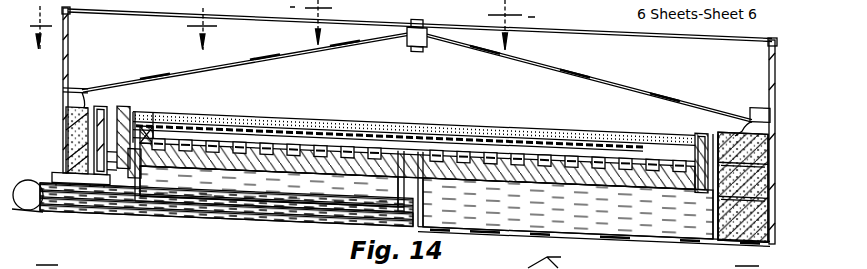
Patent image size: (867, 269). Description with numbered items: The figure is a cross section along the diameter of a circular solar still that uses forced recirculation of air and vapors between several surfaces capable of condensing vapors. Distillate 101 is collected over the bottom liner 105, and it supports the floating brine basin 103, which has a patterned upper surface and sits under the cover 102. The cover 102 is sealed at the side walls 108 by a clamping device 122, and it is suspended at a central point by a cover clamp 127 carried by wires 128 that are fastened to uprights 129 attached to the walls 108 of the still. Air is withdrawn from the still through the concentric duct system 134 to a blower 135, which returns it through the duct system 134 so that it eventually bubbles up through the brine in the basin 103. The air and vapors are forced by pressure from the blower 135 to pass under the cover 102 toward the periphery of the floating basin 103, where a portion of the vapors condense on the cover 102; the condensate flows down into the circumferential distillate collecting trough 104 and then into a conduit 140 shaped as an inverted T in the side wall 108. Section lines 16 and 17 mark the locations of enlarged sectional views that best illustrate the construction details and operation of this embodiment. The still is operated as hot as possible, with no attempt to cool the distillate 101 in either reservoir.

The section line 16- 16 is at (122, 37).
The section line 17- 17 is at (411, 31).
The distillate 101 is at (668, 220).
The cover 102 is at (572, 75).
The floating brine basin 103 is at (693, 152).
The circumferential distillate collecting trough 104 is at (88, 106).
The bottom liner 105 is at (512, 232).
The side walls 108 is at (752, 148).
The clamping device 122 is at (762, 110).
The cover clamp 127 is at (430, 36).
The wires 128 is at (106, 13).
The uprights 129 is at (776, 62).
The concentric duct system 134 is at (253, 208).
The blower 135 is at (31, 203).
The conduit 140 is at (97, 152).